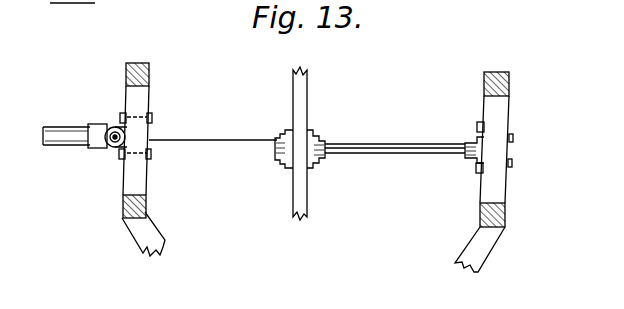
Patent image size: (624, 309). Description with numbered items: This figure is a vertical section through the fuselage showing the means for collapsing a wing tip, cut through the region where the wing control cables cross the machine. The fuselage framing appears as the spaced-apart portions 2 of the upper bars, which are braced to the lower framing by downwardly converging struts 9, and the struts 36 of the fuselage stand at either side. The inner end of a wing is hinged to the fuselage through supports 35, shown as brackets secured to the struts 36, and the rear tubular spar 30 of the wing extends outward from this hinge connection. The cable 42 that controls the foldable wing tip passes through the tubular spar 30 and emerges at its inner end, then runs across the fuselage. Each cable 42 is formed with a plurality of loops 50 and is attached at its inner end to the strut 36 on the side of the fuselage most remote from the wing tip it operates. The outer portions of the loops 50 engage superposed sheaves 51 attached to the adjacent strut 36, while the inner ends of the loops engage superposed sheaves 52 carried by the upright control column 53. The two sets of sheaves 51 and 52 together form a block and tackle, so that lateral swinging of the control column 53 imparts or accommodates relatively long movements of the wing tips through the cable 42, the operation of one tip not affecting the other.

The portions 2 is at (147, 63).
The downwardly converging struts 9 is at (160, 247).
The rear tubular spar 30 is at (73, 126).
The supports 35 is at (113, 146).
The struts 36 is at (127, 177).
The cables 42 is at (178, 139).
The loops 50 is at (412, 153).
The superposed sheaves 51 is at (465, 158).
The superposed sheaves 52 is at (277, 147).
The control column 53 is at (307, 90).